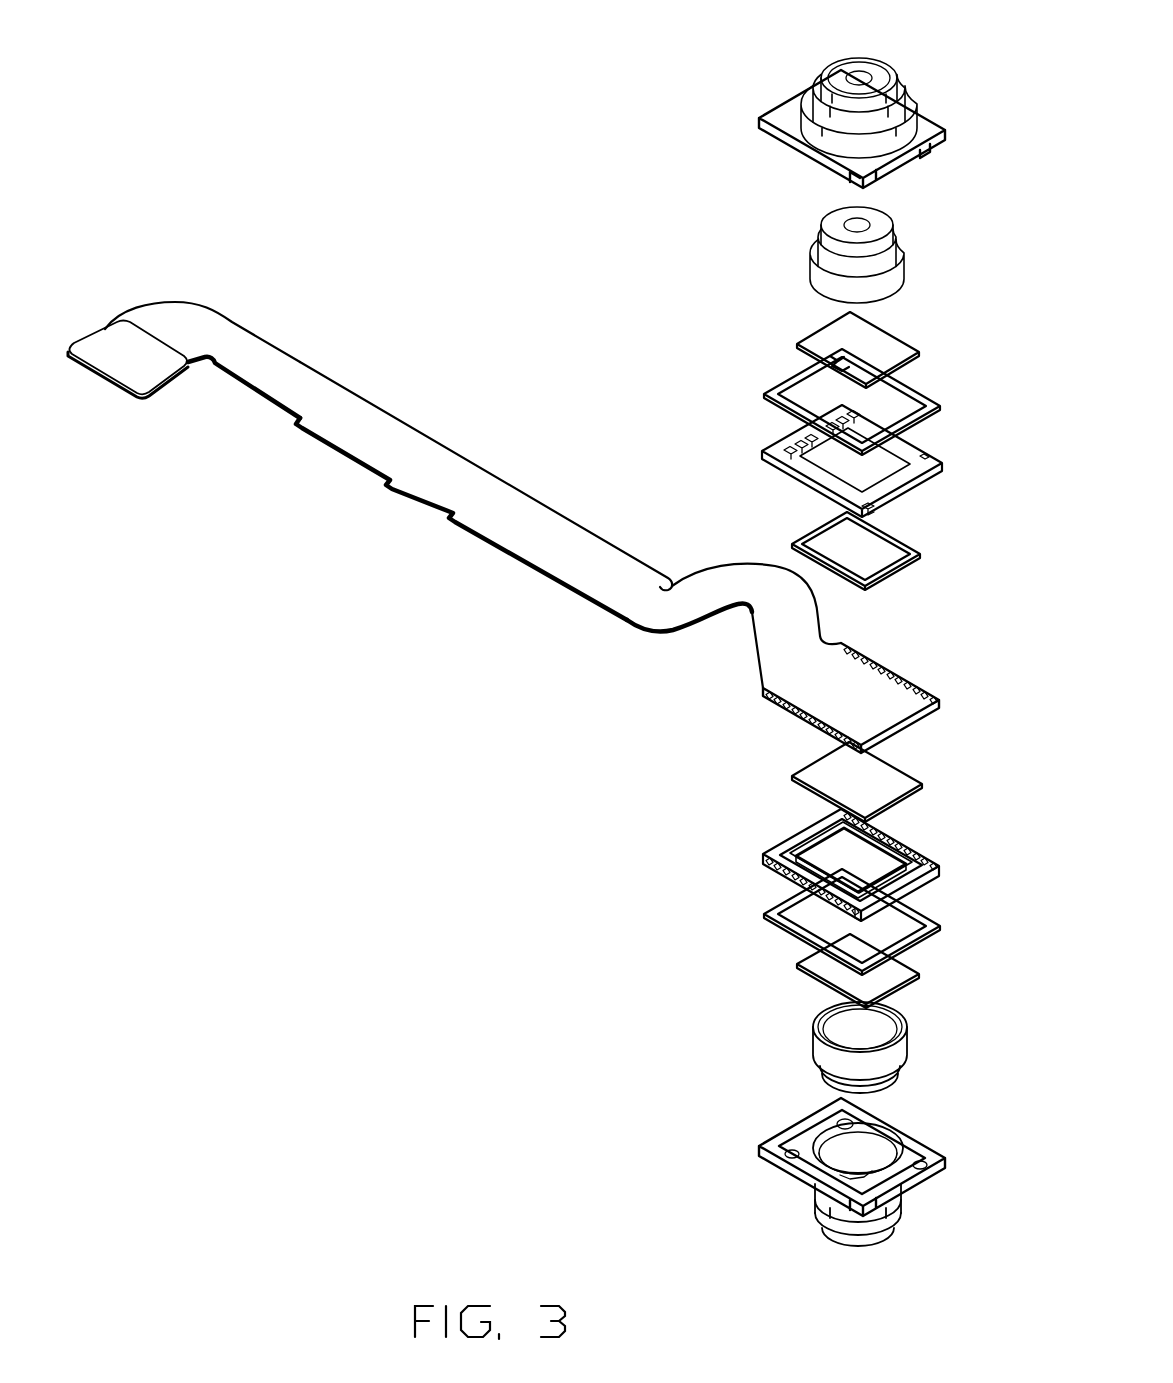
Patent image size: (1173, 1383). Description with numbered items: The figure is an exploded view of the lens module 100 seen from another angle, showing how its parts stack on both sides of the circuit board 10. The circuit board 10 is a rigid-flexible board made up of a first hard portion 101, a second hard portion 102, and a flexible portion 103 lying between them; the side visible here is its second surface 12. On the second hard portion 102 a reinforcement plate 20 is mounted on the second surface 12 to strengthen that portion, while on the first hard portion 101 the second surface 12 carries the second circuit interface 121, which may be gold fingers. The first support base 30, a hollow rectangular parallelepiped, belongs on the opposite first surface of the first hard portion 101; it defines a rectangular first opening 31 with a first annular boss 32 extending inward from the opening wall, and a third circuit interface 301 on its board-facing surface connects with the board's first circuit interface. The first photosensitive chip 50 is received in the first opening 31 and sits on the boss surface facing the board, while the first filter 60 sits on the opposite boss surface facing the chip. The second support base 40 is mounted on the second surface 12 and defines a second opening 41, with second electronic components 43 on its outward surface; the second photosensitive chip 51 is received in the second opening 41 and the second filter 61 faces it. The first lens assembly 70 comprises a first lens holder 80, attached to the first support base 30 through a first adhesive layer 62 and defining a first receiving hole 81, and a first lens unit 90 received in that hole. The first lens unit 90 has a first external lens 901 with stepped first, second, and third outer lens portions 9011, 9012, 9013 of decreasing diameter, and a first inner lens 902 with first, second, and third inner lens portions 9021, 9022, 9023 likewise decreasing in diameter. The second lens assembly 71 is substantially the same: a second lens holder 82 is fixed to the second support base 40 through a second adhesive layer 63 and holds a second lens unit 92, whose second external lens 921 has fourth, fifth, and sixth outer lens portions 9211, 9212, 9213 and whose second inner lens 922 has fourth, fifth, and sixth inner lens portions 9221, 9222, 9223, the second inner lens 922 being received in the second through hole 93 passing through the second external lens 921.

The lens module 100 is at (492, 22).
The circuit board 10 is at (423, 627).
The first hard portion 101 is at (822, 668).
The second hard portion 102 is at (180, 337).
The flexible portion 103 is at (440, 468).
The reinforcement plate 20 is at (122, 352).
The second surface 12 is at (886, 713).
The second circuit interface 121 is at (870, 663).
The first support base 30 is at (756, 855).
The first opening 31 is at (790, 845).
The first annular boss 32 is at (898, 840).
The third circuit interface 301 is at (932, 868).
The second support base 40 is at (778, 466).
The second opening 41 is at (888, 457).
The second electronic components 43 is at (790, 440).
The first photosensitive chip 50 is at (830, 775).
The second photosensitive chip 51 is at (818, 540).
The first filter 60 is at (812, 968).
The second filter 61 is at (830, 342).
The first adhesive layer 62 is at (785, 917).
The second adhesive layer 63 is at (778, 388).
The first lens assembly 70 is at (923, 1052).
The second lens assembly 71 is at (934, 212).
The first lens holder 80 is at (920, 1178).
The first receiving hole 81 is at (872, 1152).
The second lens holder 82 is at (796, 152).
The first lens unit 90 is at (564, 1040).
The first external lens 901 is at (639, 1147).
The first outer lens portion 9011 is at (847, 1224).
The second outer lens portion 9012 is at (843, 1218).
The third outer lens portion 9013 is at (795, 1182).
The first inner lens 902 is at (639, 1008).
The first inner lens portion 9021 is at (840, 1084).
The second inner lens portion 9022 is at (838, 1073).
The third inner lens portion 9023 is at (832, 1052).
The second lens unit 92 is at (568, 96).
The second external lens 921 is at (651, 60).
The fourth outer lens portion 9211 is at (822, 91).
The fifth outer lens portion 9212 is at (855, 128).
The sixth outer lens portion 9213 is at (850, 152).
The second inner lens 922 is at (651, 208).
The fourth inner lens portion 9221 is at (850, 250).
The fifth inner lens portion 9222 is at (850, 268).
The sixth inner lens portion 9223 is at (862, 296).
The second through hole 93 is at (855, 82).